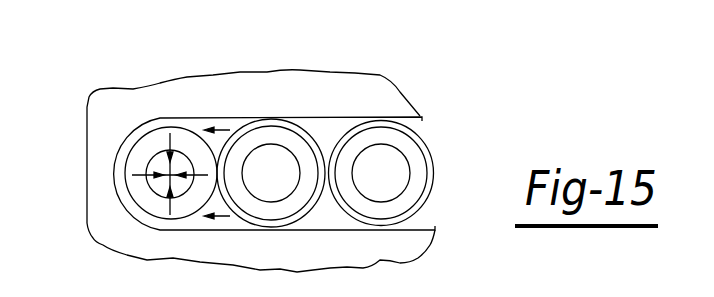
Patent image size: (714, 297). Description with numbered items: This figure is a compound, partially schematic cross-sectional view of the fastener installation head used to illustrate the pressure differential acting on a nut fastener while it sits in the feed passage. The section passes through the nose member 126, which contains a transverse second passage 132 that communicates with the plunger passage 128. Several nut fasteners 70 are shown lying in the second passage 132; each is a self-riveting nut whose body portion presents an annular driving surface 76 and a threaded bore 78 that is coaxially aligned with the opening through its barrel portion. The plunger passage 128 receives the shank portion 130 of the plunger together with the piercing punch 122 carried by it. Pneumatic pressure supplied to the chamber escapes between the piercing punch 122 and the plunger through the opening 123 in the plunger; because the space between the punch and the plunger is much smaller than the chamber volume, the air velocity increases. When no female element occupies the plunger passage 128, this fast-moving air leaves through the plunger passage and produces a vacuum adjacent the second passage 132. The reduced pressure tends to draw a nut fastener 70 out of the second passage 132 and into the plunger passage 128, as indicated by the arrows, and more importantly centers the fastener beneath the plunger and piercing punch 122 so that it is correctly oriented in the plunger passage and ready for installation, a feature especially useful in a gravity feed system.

The self-riveting nut fastener 70 is at (300, 128).
The annular driving surface 76 is at (255, 207).
The threaded bore 78 is at (274, 198).
The piercing punch 122 is at (160, 158).
The opening 123 is at (152, 187).
The nose member 126 is at (303, 100).
The plunger passage 128 is at (147, 137).
The shank portion 130 is at (188, 140).
The second passage 132 is at (232, 117).